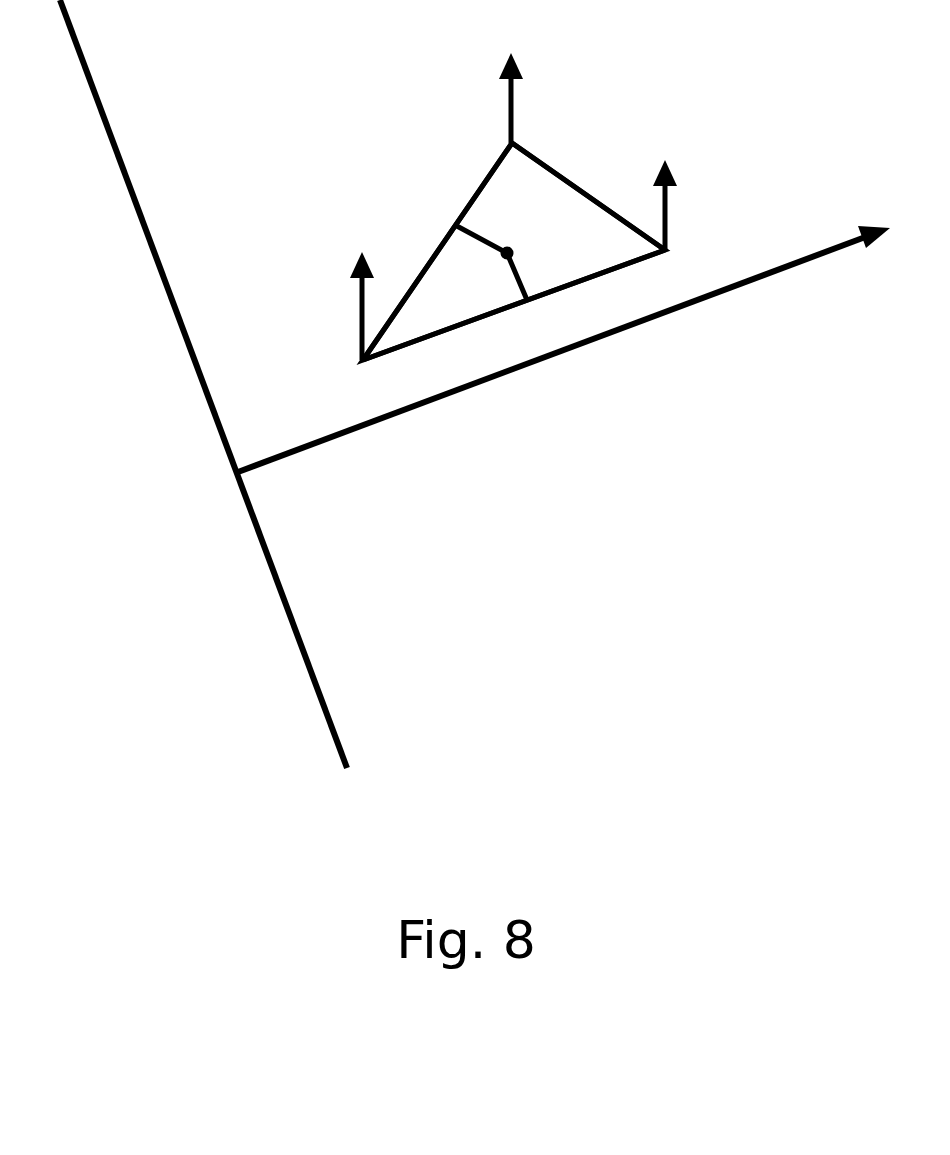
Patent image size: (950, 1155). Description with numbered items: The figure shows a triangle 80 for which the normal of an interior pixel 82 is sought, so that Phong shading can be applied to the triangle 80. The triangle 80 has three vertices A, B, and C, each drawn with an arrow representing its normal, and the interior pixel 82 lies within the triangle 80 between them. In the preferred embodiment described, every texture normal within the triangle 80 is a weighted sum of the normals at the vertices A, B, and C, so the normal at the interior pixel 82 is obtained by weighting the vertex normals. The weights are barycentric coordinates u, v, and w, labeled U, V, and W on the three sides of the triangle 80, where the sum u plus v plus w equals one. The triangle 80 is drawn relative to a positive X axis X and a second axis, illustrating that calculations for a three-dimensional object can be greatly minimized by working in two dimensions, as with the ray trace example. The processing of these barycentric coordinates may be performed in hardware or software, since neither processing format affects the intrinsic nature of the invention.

The triangle 80 is at (515, 209).
The interior pixel 82 is at (514, 257).
The vertex A is at (345, 308).
The vertex B is at (491, 100).
The vertex C is at (682, 205).
The barycentric coordinate u U is at (437, 251).
The barycentric coordinate v V is at (588, 193).
The barycentric coordinate w W is at (514, 305).
The +X axis X is at (564, 329).